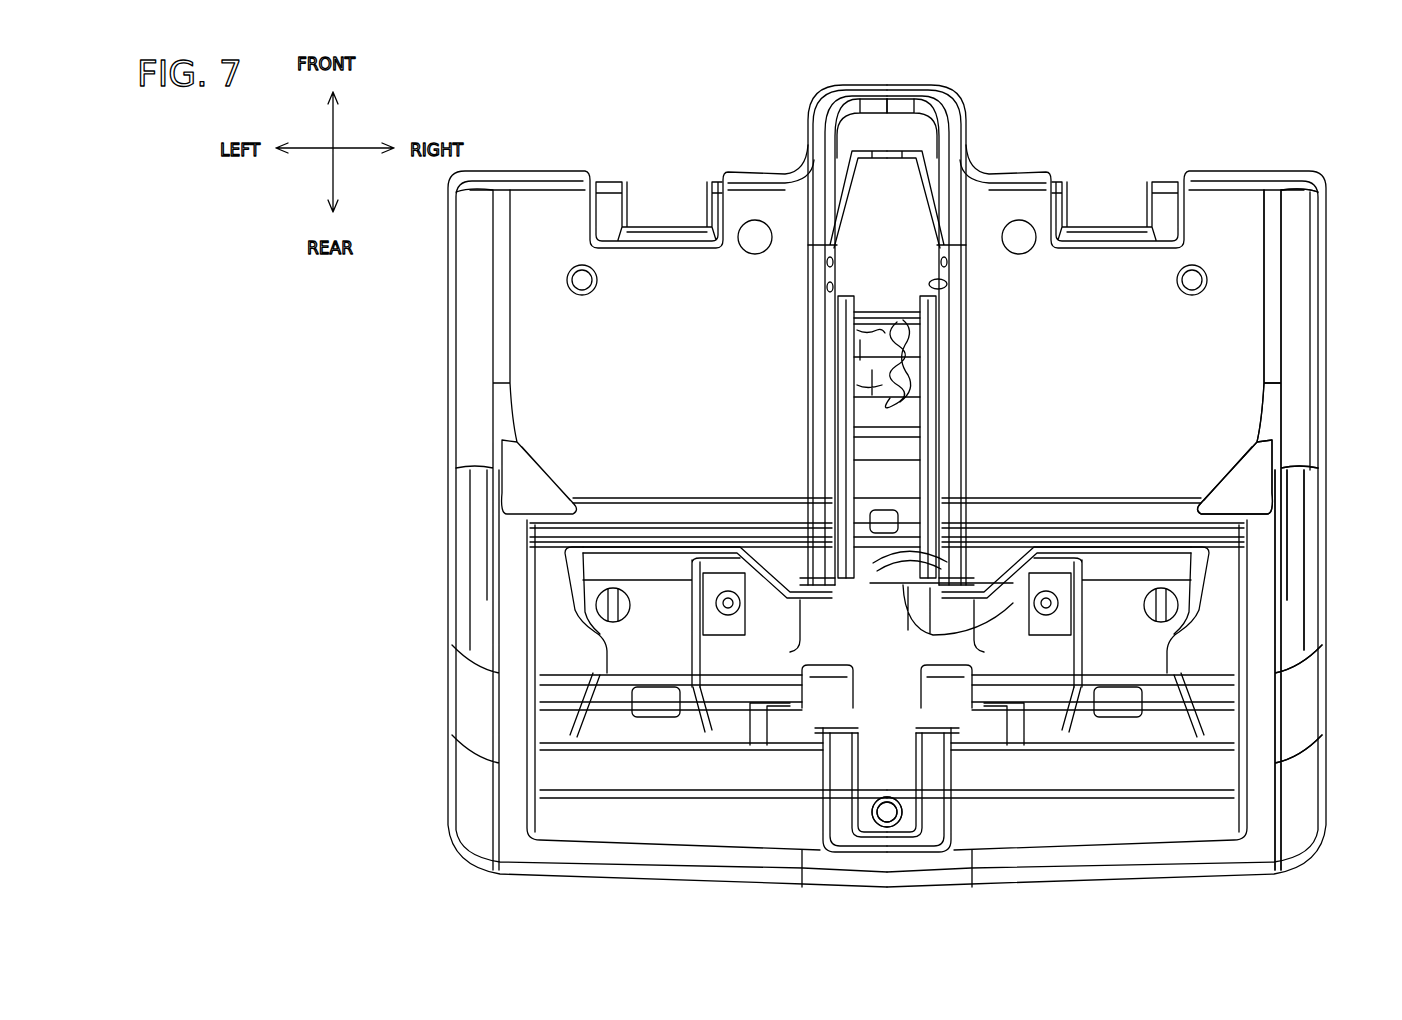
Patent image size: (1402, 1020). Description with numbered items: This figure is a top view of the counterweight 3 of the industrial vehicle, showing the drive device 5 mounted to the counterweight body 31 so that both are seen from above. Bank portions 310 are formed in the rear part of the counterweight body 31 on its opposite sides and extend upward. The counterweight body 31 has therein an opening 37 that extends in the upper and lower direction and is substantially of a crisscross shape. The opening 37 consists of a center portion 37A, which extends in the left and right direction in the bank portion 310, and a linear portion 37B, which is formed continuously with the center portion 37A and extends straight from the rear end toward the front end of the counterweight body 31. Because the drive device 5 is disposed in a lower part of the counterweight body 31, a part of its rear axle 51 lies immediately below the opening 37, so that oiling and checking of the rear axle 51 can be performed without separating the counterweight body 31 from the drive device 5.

The counterweight 3 is at (1320, 138).
The counterweight body 31 is at (1333, 240).
The bank portion 310 is at (1300, 612).
The opening 37 is at (858, 194).
The center portion 37A is at (978, 605).
The linear portion 37B is at (946, 287).
The drive device 5 is at (868, 300).
The rear axle 51 is at (820, 612).